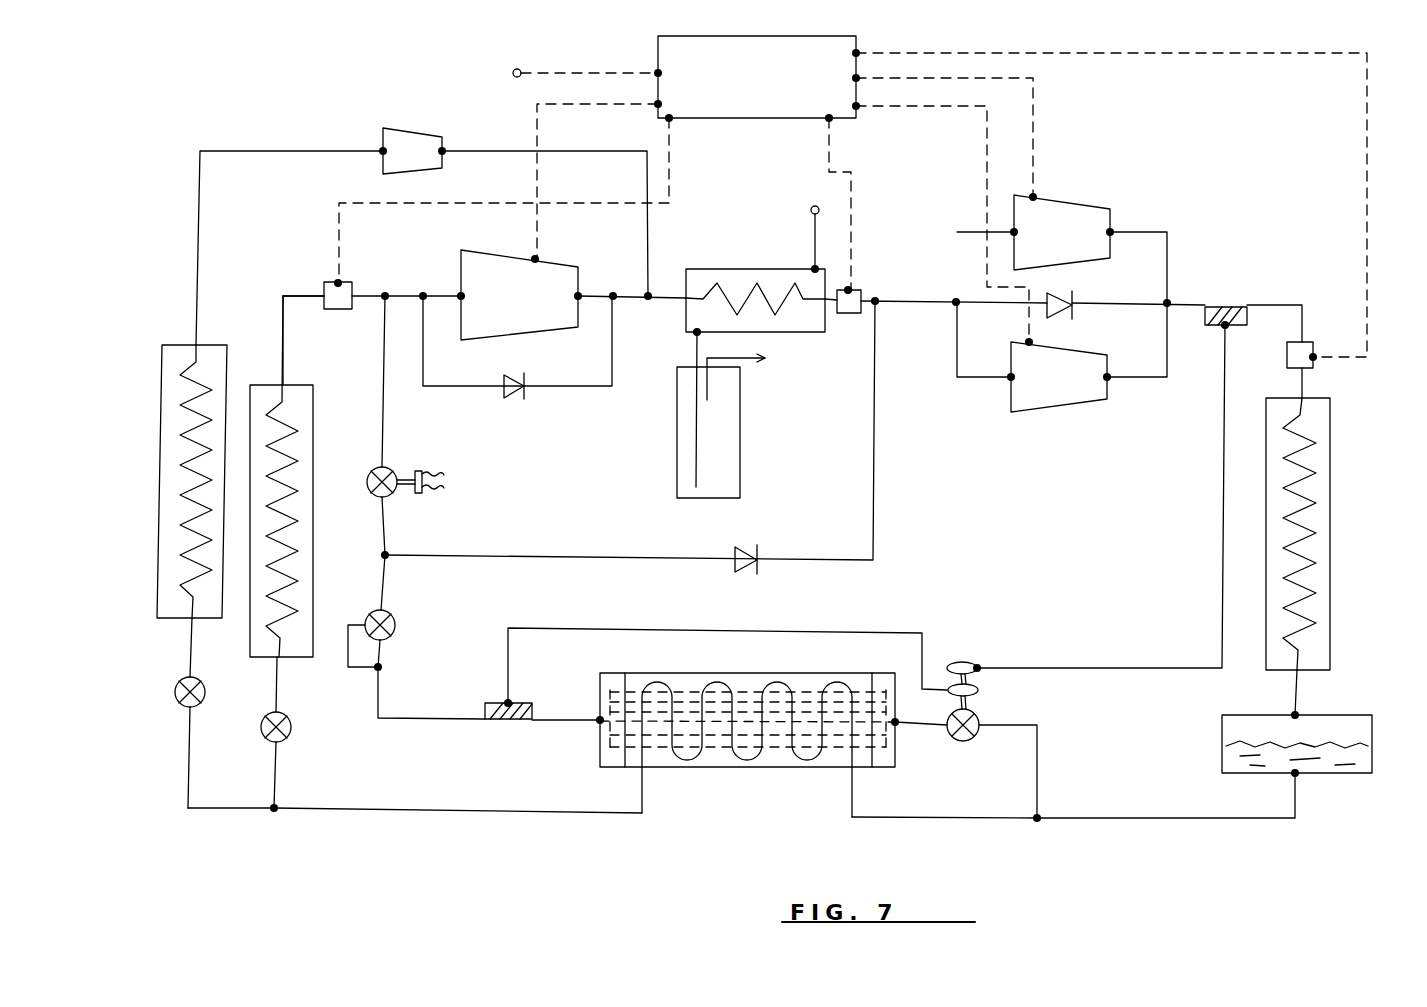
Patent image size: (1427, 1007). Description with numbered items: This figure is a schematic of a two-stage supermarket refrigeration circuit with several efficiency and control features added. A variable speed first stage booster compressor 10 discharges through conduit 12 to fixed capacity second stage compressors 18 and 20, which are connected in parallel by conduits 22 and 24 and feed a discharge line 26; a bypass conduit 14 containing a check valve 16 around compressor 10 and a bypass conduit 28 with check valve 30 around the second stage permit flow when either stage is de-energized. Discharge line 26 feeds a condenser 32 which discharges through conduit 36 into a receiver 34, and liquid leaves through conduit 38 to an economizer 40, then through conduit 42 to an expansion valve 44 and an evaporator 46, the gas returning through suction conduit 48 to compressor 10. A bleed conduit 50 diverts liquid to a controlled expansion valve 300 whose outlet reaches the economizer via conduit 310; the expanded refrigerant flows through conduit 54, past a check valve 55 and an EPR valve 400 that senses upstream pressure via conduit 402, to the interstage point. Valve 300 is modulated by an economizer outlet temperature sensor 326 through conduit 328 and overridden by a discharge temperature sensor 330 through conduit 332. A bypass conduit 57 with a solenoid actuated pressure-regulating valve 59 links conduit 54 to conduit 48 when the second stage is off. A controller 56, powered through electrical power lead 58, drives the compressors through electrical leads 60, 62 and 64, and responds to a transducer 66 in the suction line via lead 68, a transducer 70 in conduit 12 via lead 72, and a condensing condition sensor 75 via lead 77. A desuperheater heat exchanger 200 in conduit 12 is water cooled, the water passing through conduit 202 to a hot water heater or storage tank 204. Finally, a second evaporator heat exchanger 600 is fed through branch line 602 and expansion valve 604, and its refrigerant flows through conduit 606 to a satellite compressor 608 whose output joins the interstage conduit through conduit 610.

The first stage booster compressor 10 is at (505, 309).
The conduit 12 is at (622, 300).
The bypass line 14 is at (548, 388).
The check valve 16 is at (515, 375).
The second stage compressor 18 is at (1050, 245).
The second stage compressor 20 is at (1046, 390).
The conduit 22 is at (960, 380).
The conduit 24 is at (957, 242).
The discharge line 26 is at (1195, 304).
The bypass conduit 28 is at (1152, 307).
The check valve 30 is at (1080, 297).
The condenser 32 is at (1331, 440).
The receiver 34 is at (1373, 722).
The conduit 36 is at (1300, 692).
The conduit 38 is at (936, 820).
The economizer 40 is at (755, 769).
The conduit 42 is at (446, 816).
The expansion valve 44 is at (292, 734).
The evaporator 46 is at (314, 461).
The conduit 48 is at (284, 290).
The bleed conduit 50 is at (1038, 764).
The conduit 54 is at (872, 466).
The check valve 55 is at (745, 574).
The controller 56 is at (742, 95).
The bypass conduit 57 is at (386, 412).
The electrical power lead 58 is at (575, 72).
The solenoid actuated upstream pressure-regulating valve 59 is at (378, 500).
The electrical lead 60 is at (582, 106).
The electrical lead 62 is at (1036, 108).
The electrical lead 64 is at (958, 108).
The transducer 66 is at (340, 310).
The lead 68 is at (390, 205).
The transducer 70 is at (864, 292).
The lead 72 is at (855, 203).
The sensor 75 is at (1316, 340).
The lead 77 is at (1230, 62).
The desuperheater heat exchanger 200 is at (701, 269).
The conduit 202 is at (814, 243).
The hot water heater or storage tank 204 is at (677, 448).
The controlled expansion valve 300 is at (982, 692).
The conduit 310 is at (926, 728).
The economizer outlet temperature sensor 326 is at (509, 722).
The conduit 328 is at (648, 628).
The discharge temperature sensor 330 is at (1242, 307).
The conduit 332 is at (1118, 667).
The EPR valve 400 is at (396, 626).
The conduit 402 is at (362, 669).
The heat exchanger 600 is at (162, 465).
The branch line 602 is at (189, 753).
The expansion valve 604 is at (175, 692).
The conduit 606 is at (250, 150).
The satellite compressor 608 is at (410, 132).
The conduit 610 is at (585, 153).